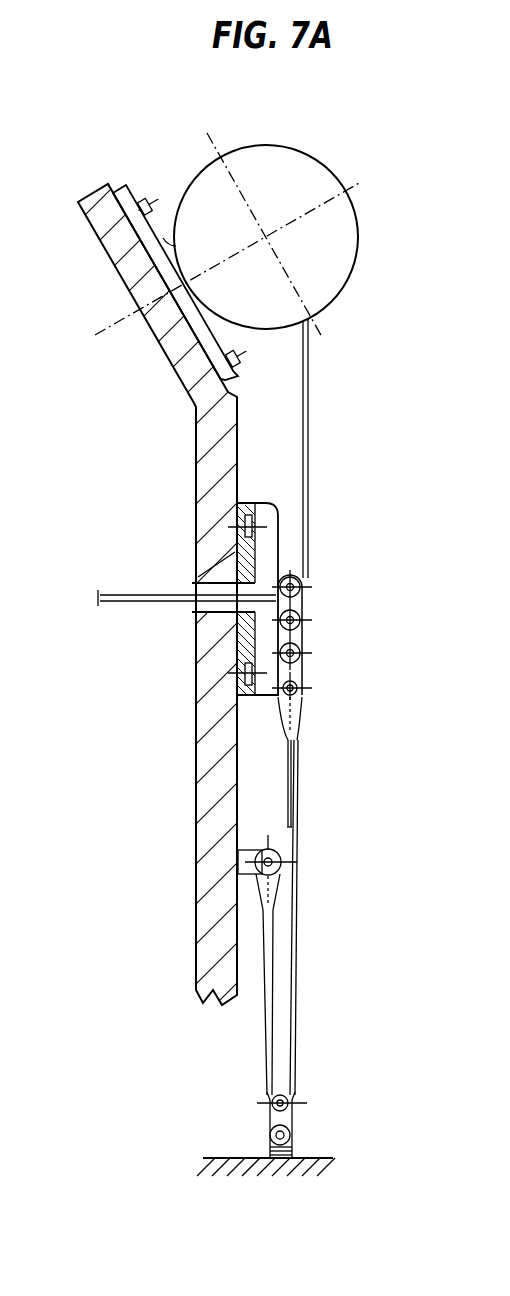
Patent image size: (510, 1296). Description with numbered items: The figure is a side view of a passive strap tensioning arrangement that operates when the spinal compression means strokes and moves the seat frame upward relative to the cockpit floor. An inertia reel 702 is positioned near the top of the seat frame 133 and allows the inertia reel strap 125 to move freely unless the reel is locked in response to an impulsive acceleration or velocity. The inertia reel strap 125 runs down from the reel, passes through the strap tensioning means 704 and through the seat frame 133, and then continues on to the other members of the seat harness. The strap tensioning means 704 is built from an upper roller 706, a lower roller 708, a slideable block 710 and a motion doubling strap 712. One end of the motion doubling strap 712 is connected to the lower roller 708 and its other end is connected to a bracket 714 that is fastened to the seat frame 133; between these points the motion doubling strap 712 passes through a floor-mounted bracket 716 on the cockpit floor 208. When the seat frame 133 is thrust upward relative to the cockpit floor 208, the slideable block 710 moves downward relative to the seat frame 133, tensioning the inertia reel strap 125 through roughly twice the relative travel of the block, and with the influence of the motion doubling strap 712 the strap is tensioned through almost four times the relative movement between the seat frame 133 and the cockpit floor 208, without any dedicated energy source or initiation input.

The inertia reel 702 is at (358, 240).
The inertia reel strap 125 is at (310, 437).
The strap tensioning means 704 is at (345, 537).
The upper roller 706 is at (310, 590).
The slideable block 710 is at (310, 630).
The lower roller 708 is at (305, 688).
The motion doubling strap 712 is at (298, 783).
The seat frame 133 is at (126, 593).
The bracket 714 is at (261, 847).
The floor-mounted bracket 716 is at (293, 1094).
The cockpit floor 208 is at (333, 1157).